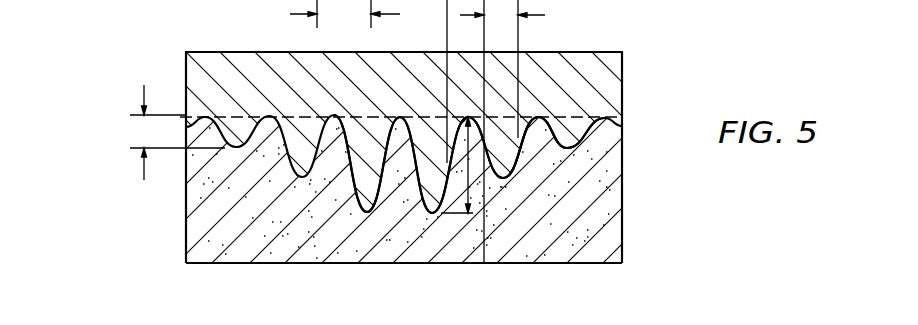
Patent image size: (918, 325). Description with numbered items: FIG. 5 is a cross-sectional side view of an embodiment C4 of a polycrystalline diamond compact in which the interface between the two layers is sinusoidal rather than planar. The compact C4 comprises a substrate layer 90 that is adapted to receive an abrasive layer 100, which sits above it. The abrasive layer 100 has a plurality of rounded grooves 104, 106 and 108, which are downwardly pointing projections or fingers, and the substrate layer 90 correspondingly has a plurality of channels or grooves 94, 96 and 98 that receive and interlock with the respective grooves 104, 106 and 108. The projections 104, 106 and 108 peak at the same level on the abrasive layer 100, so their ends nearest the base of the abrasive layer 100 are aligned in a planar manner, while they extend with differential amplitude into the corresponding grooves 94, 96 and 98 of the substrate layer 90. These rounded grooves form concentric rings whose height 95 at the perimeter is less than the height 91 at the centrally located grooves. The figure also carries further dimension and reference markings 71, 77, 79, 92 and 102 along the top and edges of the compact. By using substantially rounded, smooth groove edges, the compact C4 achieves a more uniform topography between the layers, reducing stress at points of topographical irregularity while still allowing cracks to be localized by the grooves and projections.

The abrasive layer 100 is at (186, 68).
The substrate layer 90 is at (205, 217).
The groove 94 is at (575, 147).
The bottom surface 92 is at (258, 263).
The top surface 102 is at (596, 52).
The rounded groove 104 is at (565, 145).
The rounded groove 108 is at (385, 230).
The groove 98 is at (424, 185).
The groove 96 is at (512, 182).
The rounded groove 106 is at (548, 172).
The height 91 is at (484, 263).
The height 95 is at (145, 128).
The ridge pitch 79 is at (345, 15).
The ridge spacing 71 is at (503, 13).
The ridge width 77 is at (263, 0).
The compact embodiment C4 is at (95, 193).